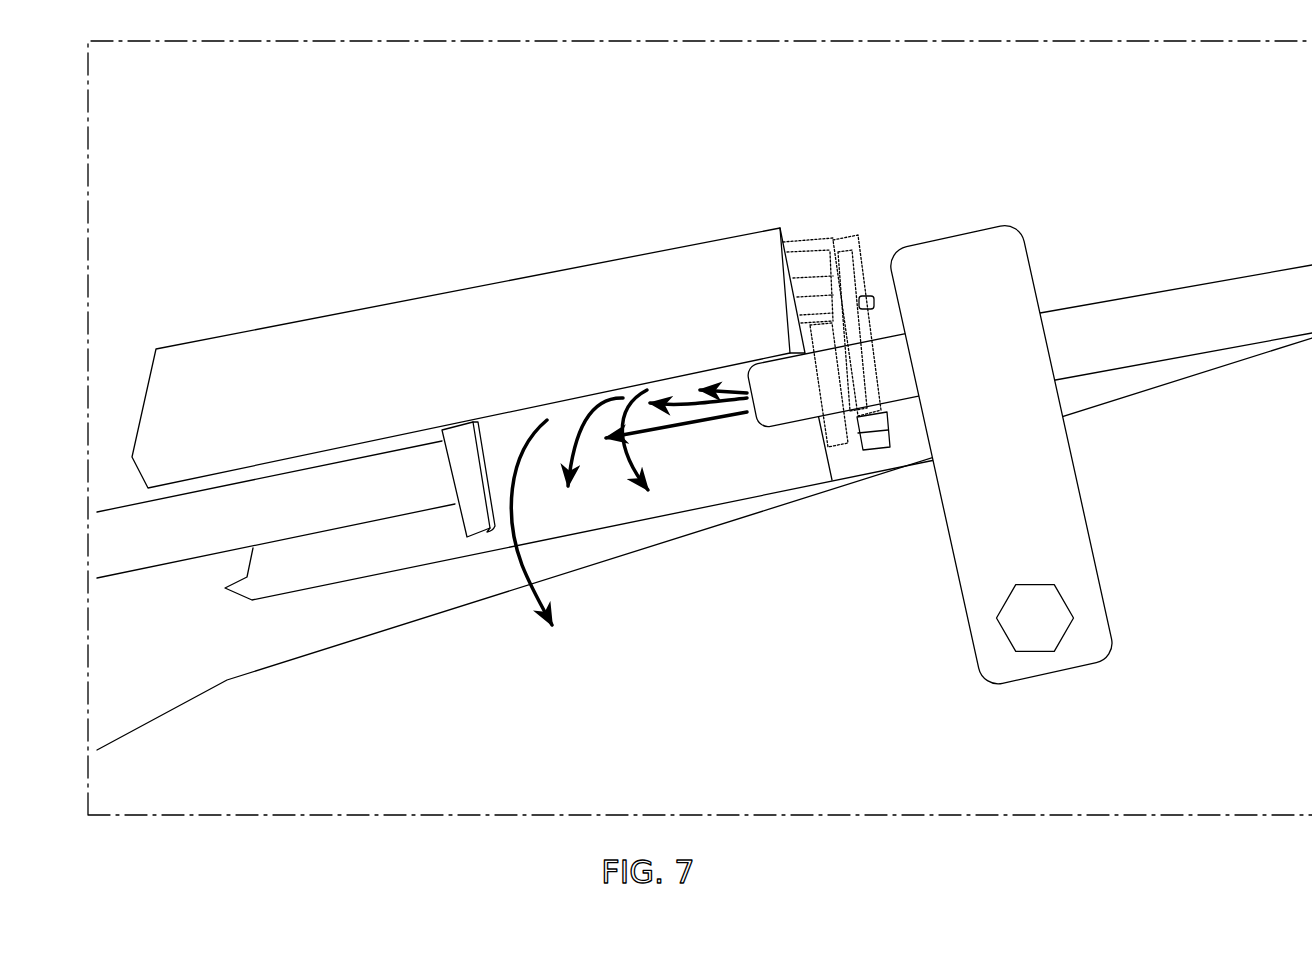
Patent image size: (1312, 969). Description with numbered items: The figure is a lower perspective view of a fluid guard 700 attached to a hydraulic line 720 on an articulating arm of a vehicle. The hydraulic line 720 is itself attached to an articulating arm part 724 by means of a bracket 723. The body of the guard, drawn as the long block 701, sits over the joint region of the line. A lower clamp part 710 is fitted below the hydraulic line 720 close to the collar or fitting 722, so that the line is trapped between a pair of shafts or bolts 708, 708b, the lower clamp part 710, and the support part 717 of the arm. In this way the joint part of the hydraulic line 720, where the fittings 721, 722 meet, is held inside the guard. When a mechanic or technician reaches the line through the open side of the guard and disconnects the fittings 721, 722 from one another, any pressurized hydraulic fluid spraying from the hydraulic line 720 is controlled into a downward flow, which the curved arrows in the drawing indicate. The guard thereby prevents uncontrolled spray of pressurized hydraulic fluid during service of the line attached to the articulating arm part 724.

The fluid guard 700 is at (526, 206).
The block / housing body 701 is at (287, 365).
The shaft or bolt 708 is at (878, 318).
The shaft or bolt 708b is at (838, 273).
The support part 717 is at (850, 240).
The bracket 723 is at (947, 234).
The hydraulic line 720 is at (1172, 290).
The articulating arm part 724 is at (704, 544).
The lower clamp part 710 is at (878, 450).
The collar or fitting 722 is at (820, 383).
The fitting 721 is at (480, 535).